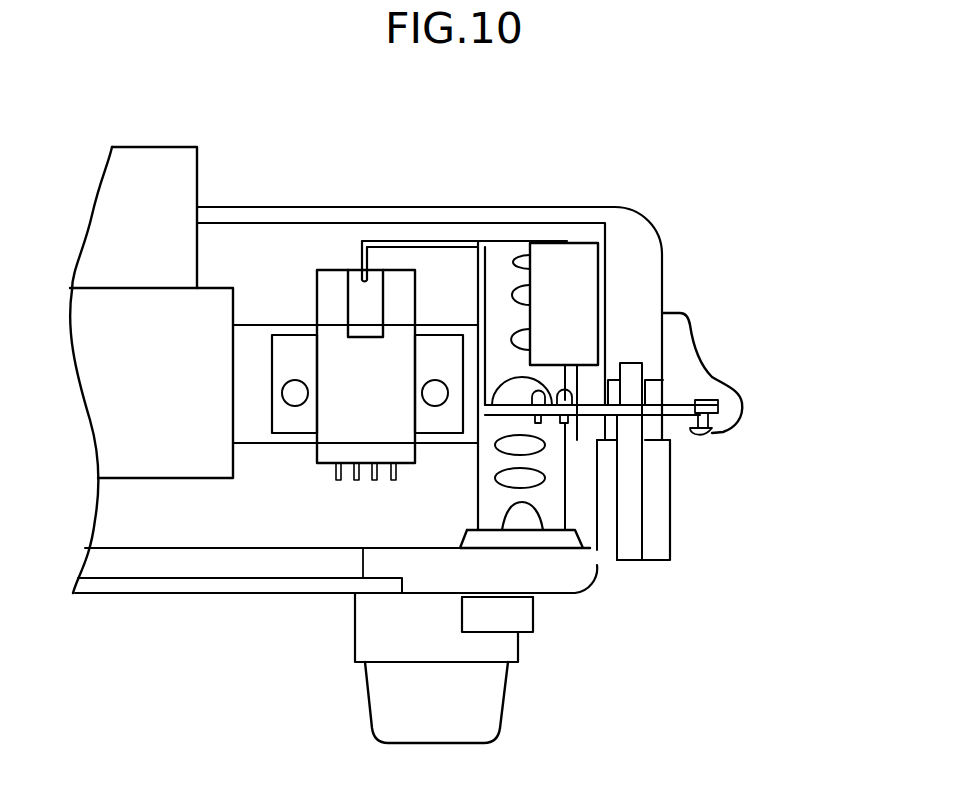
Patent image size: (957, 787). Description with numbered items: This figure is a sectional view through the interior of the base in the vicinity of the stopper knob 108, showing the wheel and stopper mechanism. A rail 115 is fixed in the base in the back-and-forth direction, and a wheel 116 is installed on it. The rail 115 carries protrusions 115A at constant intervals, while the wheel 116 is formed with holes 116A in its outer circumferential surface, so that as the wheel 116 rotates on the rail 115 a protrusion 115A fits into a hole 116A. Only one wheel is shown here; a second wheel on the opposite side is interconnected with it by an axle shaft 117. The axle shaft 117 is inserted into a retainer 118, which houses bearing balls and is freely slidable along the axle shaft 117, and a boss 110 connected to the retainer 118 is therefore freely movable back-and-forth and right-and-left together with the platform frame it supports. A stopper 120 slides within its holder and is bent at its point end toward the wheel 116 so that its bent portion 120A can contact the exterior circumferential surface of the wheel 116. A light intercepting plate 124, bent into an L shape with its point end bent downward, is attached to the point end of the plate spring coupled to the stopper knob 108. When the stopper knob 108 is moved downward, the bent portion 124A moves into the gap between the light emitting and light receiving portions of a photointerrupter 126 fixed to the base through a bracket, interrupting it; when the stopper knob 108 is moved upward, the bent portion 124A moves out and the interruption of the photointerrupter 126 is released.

The stopper knob 108 is at (713, 373).
The boss 110 is at (158, 183).
The rail 115 is at (488, 538).
The protrusion 115A is at (522, 523).
The wheel 116 is at (555, 492).
The hole 116A is at (535, 445).
The axle shaft 117 is at (257, 337).
The retainer 118 is at (172, 448).
The stopper 120 is at (603, 258).
The bent portion 120A is at (555, 272).
The light intercepting plate 124 is at (428, 240).
The bent portion 124A is at (362, 262).
The photointerrupter 126 is at (352, 428).